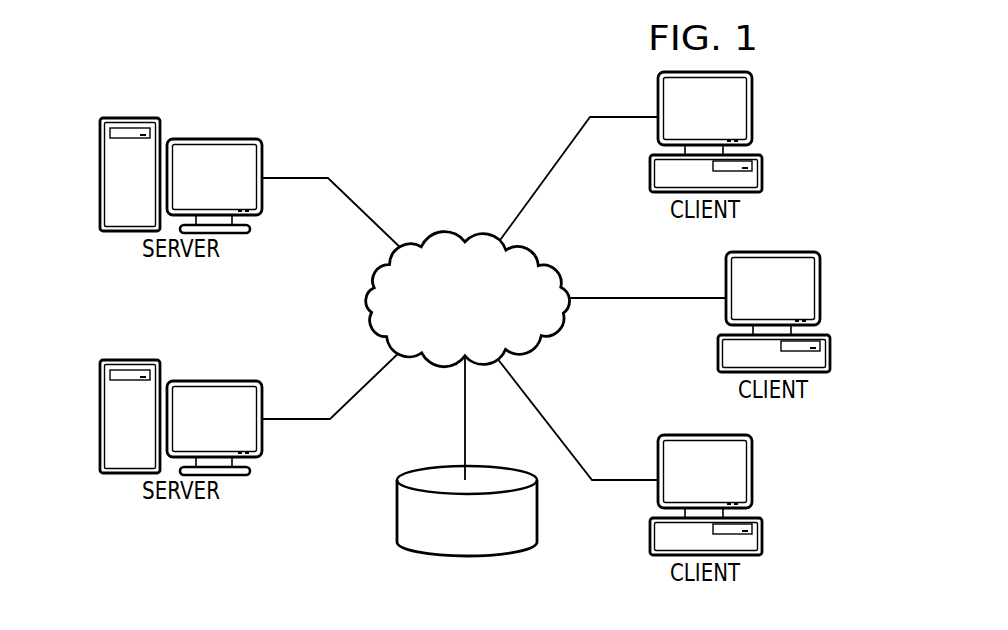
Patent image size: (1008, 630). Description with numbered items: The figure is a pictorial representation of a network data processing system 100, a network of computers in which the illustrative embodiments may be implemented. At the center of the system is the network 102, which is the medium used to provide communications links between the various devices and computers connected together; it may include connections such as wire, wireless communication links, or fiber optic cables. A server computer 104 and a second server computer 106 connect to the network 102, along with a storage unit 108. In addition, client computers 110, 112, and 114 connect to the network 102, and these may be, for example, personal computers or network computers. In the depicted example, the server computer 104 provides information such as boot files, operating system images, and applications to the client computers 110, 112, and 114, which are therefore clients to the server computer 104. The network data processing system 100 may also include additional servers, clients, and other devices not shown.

The network data processing system 100 is at (333, 85).
The network 102 is at (458, 239).
The server computer 104 is at (100, 173).
The server computer 106 is at (100, 420).
The storage unit 108 is at (397, 513).
The client computer 110 is at (762, 172).
The client computer 112 is at (830, 353).
The client computer 114 is at (760, 537).